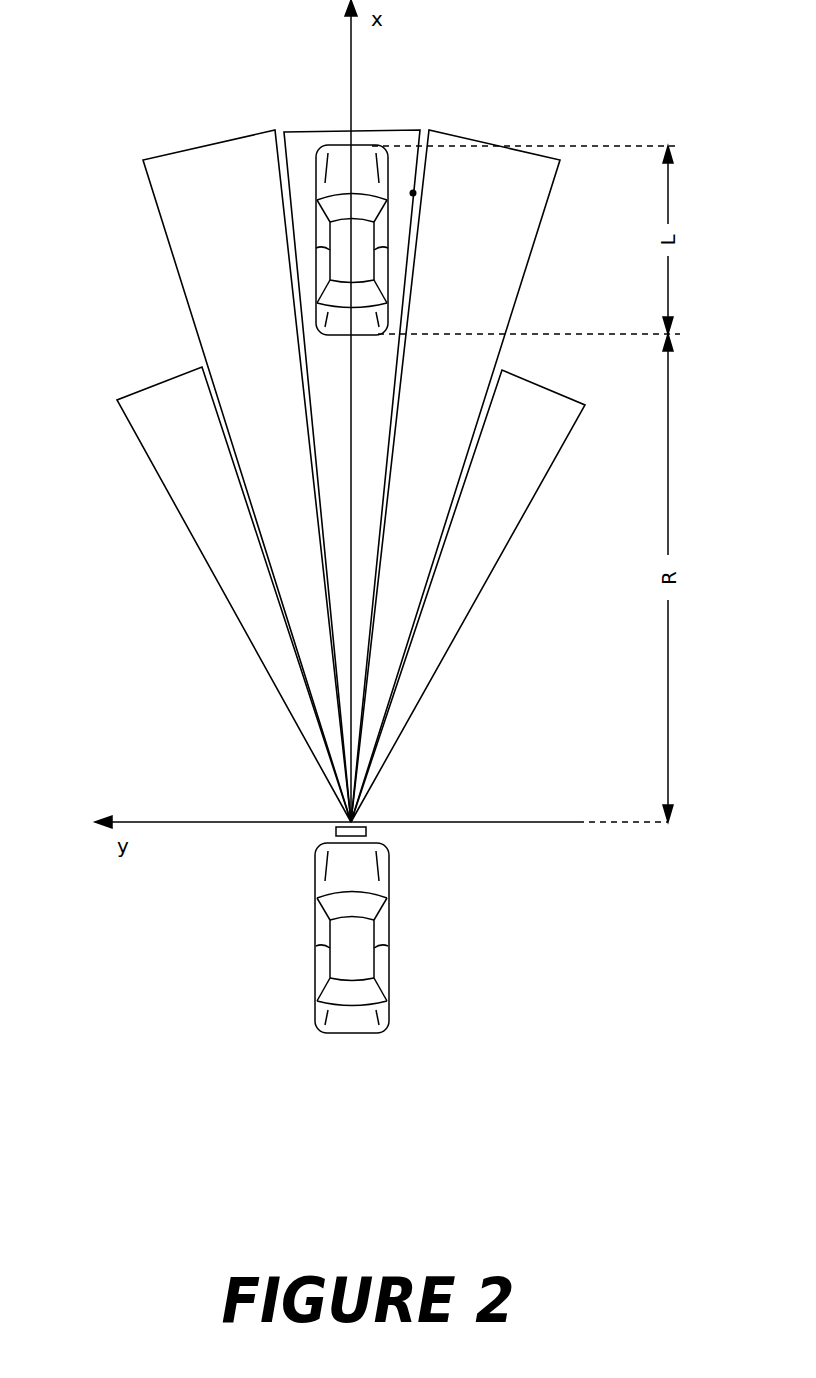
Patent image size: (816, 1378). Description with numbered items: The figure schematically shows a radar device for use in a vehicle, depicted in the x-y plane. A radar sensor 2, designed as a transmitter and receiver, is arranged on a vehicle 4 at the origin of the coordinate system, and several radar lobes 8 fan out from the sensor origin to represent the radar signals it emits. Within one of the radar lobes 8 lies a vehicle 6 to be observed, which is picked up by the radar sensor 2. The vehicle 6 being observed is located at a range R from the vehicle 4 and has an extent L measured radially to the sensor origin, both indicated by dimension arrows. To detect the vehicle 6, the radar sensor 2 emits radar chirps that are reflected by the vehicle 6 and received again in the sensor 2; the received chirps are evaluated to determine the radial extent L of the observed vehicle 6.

The radar sensor 2 is at (366, 832).
The vehicle 4 is at (389, 909).
The vehicle to be observed 6 is at (362, 143).
The radar lobe 8 is at (214, 146).